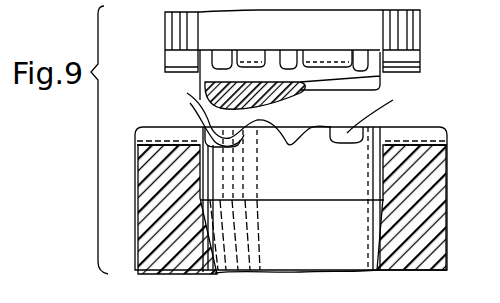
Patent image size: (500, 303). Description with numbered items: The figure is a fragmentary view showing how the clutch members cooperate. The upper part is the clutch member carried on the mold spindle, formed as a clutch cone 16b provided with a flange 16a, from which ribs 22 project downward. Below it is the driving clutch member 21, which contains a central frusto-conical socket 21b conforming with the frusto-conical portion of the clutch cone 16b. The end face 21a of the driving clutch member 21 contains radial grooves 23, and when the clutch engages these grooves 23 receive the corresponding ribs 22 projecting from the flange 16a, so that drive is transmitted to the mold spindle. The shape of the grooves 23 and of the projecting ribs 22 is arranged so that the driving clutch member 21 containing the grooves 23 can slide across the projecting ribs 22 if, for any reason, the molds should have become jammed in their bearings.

The flange 16a is at (192, 29).
The clutch cone 16b is at (385, 73).
The ribs 22 is at (355, 60).
The radial grooves 23 is at (180, 133).
The driving clutch member 21 is at (173, 232).
The end face 21a is at (417, 157).
The frusto-conical socket 21b is at (370, 233).